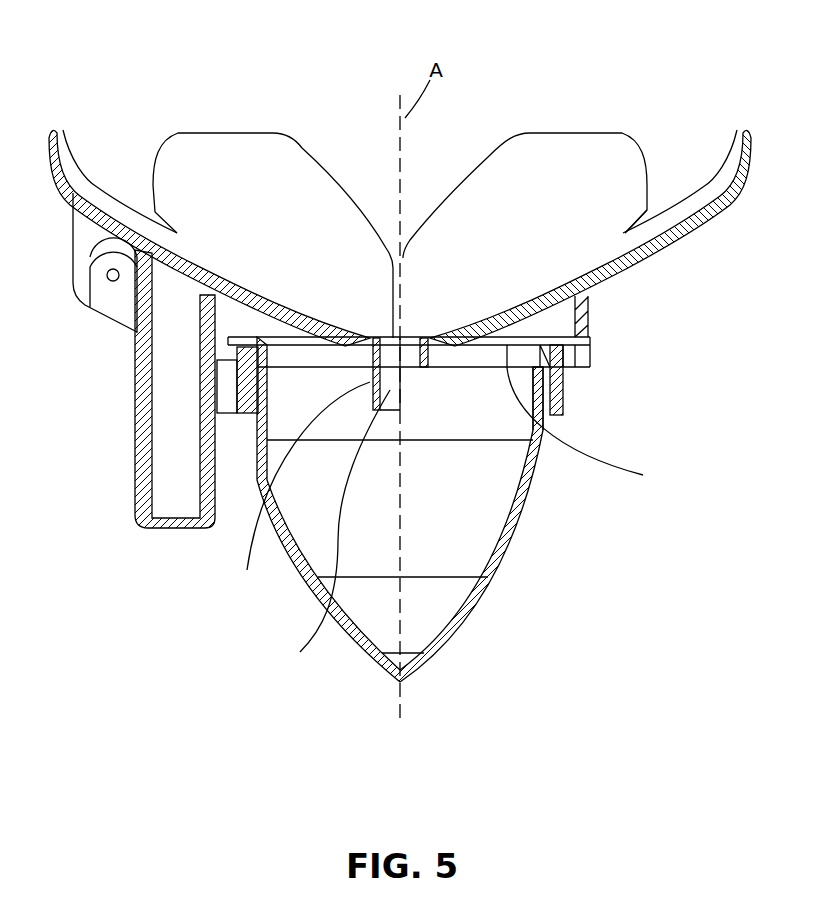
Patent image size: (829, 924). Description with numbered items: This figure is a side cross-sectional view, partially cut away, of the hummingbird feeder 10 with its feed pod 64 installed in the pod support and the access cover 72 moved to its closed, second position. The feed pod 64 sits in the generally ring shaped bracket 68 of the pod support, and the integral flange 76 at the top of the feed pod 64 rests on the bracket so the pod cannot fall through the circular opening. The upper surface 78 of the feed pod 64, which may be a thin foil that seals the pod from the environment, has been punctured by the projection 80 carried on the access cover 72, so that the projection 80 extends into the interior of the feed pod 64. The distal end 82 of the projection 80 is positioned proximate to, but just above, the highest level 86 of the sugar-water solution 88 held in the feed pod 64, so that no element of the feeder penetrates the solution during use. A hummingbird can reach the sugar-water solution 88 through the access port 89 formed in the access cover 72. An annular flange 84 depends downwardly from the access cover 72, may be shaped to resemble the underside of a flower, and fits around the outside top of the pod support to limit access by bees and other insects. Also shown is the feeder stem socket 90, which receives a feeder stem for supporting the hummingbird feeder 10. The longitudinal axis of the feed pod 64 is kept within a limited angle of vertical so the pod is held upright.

The hummingbird feeder 10 is at (712, 100).
The feed pod 64 is at (473, 607).
The ring shaped bracket 68 is at (570, 395).
The access cover 72 is at (563, 190).
The flange 76 is at (555, 337).
The upper surface 78 is at (592, 418).
The projection 80 is at (298, 492).
The distal end 82 is at (300, 652).
The annular flange 84 is at (587, 333).
The highest level 86 is at (490, 442).
The sugar-water solution 88 is at (483, 545).
The access port 89 is at (391, 265).
The feeder stem socket 90 is at (137, 488).